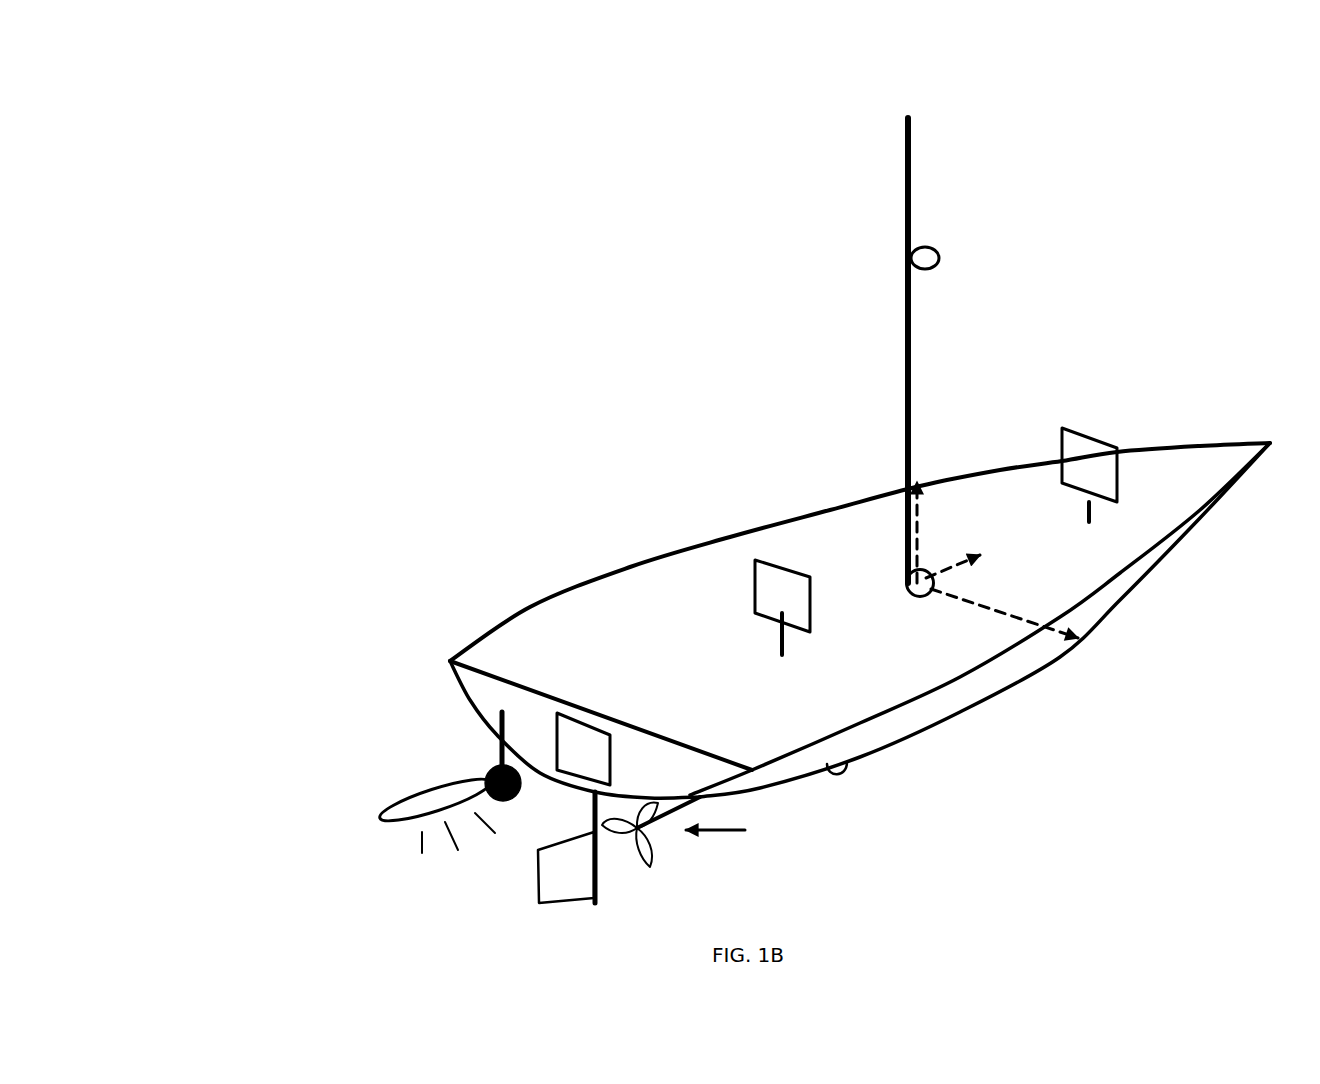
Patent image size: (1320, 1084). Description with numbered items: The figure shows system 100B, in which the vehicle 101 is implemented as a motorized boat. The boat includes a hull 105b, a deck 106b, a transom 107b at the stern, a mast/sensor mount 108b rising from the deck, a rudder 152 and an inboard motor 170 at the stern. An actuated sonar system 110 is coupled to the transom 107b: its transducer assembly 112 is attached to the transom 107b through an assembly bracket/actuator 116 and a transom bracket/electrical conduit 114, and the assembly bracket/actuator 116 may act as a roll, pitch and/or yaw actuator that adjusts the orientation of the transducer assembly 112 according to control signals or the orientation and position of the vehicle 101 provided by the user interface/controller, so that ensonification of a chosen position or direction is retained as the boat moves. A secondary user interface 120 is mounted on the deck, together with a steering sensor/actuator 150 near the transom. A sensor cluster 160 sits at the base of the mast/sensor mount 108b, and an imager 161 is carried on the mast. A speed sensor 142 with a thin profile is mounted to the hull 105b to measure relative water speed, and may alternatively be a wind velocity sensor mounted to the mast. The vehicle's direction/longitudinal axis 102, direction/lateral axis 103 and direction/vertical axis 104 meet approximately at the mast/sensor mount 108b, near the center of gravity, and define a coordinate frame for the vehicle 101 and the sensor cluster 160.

The system 100B is at (190, 112).
The vehicle 101 is at (478, 617).
The direction/longitudinal axis 102 is at (950, 563).
The direction/lateral axis 103 is at (1025, 618).
The direction/vertical axis 104 is at (918, 500).
The hull 105b is at (977, 688).
The deck 106b is at (1160, 515).
The transom 107b is at (480, 697).
The mast/sensor mount 108b is at (906, 161).
The sonar system 110 is at (350, 735).
The transducer assembly 112 is at (410, 813).
The transom bracket/electrical conduit 114 is at (497, 733).
The assembly bracket/actuator 116 is at (488, 770).
The secondary user interface 120 is at (1062, 458).
The speed sensor 142 is at (848, 768).
The steering sensor/actuator 150 is at (602, 761).
The rudder 152 is at (577, 882).
The sensor cluster 160 is at (936, 577).
The imager 161 is at (939, 258).
The inboard motor 170 is at (702, 832).